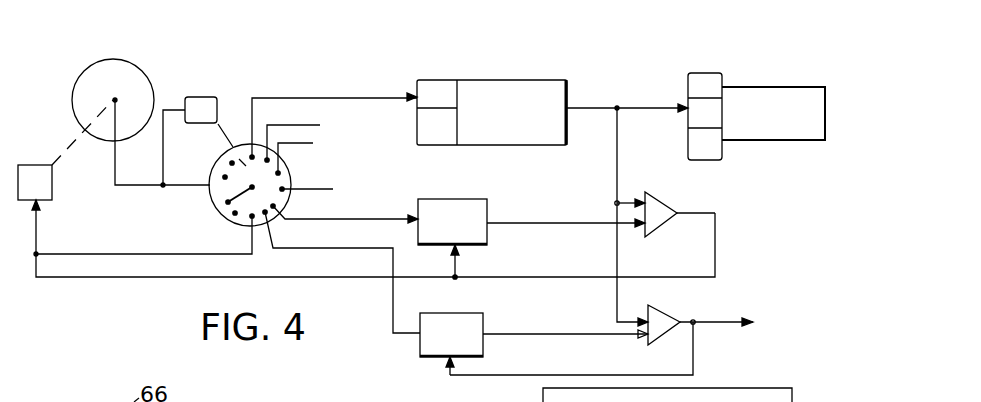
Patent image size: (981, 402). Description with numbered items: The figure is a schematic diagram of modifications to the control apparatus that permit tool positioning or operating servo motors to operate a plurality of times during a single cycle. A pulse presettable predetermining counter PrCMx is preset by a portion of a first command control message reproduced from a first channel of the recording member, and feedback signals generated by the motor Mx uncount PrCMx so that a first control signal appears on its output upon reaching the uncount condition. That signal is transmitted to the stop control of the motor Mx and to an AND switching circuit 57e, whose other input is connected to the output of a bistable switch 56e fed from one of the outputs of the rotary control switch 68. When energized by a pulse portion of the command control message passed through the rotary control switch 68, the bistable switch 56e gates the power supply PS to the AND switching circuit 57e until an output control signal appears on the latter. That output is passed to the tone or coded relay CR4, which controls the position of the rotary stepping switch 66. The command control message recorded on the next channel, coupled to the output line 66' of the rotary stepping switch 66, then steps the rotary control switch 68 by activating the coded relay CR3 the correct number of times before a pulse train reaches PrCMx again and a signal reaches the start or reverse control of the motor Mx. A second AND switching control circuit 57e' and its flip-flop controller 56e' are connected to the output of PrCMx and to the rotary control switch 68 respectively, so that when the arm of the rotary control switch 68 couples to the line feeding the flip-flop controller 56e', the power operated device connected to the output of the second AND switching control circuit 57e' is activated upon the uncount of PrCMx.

The rotary stepping switch 66 is at (120, 108).
The output line 66' is at (177, 208).
The rotary control switch 68 is at (226, 156).
The coded relay CR3 is at (197, 97).
The tone or coded relay CR4 is at (50, 196).
The pulse presettable predetermining counter PrCMx is at (498, 82).
The motor Mx is at (755, 86).
The power supply PS is at (447, 199).
The bistable switch 56e is at (531, 224).
The AND switching circuit 57e is at (682, 205).
The flip-flop controller 56e' is at (534, 333).
The second AND switching control circuit 57e' is at (601, 333).